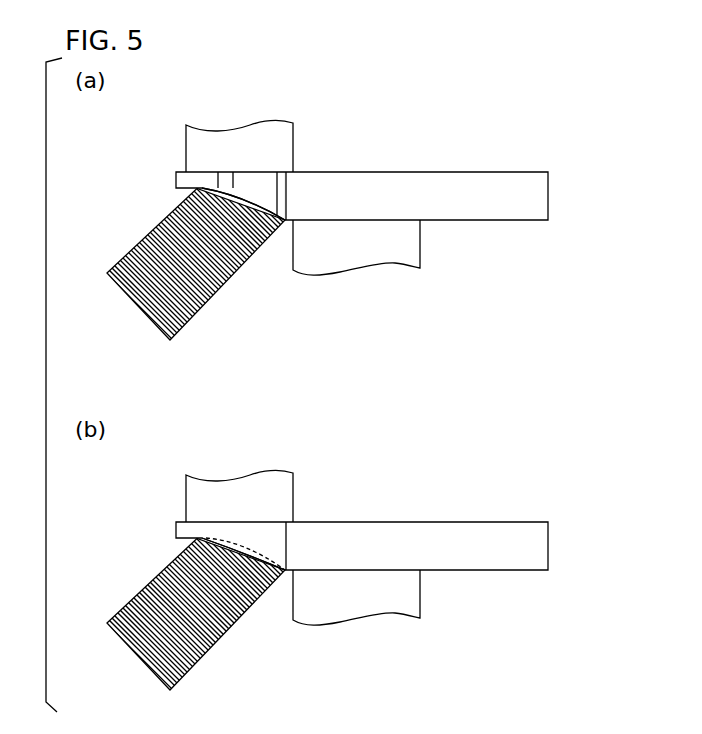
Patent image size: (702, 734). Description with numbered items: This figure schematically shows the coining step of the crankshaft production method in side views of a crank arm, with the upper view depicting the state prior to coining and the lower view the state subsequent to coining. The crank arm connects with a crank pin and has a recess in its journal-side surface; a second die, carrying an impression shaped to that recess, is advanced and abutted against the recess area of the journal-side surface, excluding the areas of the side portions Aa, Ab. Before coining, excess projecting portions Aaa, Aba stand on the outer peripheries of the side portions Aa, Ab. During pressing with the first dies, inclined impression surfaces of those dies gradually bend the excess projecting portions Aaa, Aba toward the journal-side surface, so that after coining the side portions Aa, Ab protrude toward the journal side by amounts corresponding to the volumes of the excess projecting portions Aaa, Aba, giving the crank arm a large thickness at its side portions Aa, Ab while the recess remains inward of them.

The excess projecting portion Aaa is at (269, 148).
The excess projecting portion Aba is at (250, 187).
The side portion Aa is at (260, 498).
The side portion Ab is at (250, 535).